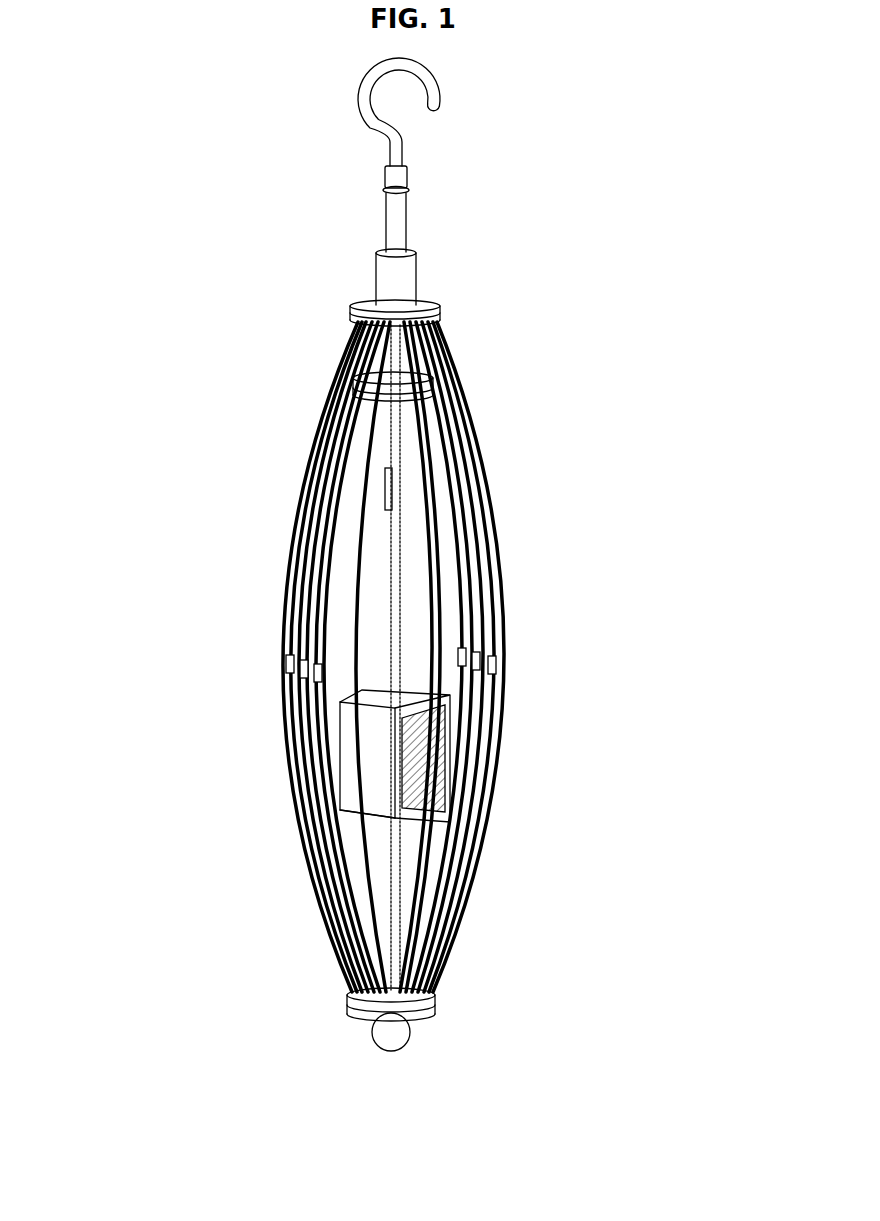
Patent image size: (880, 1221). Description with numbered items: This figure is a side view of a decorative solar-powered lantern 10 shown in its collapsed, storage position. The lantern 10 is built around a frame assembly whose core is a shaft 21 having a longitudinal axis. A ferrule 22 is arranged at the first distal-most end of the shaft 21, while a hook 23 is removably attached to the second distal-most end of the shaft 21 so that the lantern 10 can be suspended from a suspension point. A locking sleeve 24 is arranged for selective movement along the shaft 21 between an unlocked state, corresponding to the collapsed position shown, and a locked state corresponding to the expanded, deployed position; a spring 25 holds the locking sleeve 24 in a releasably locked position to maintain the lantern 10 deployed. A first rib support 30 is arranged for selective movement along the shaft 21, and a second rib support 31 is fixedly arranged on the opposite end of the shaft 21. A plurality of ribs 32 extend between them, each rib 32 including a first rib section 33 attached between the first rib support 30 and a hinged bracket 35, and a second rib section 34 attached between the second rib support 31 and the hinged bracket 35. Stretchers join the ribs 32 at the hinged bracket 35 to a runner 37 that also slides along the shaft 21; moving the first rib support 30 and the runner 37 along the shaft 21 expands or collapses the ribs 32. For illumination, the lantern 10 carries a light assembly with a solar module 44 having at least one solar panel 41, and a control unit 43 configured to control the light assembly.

The solar-powered lantern 10 is at (112, 120).
The shaft 21 is at (400, 180).
The ferrule 22 is at (395, 1032).
The hook 23 is at (432, 97).
The locking sleeve 24 is at (400, 280).
The spring 25 is at (388, 505).
The first rib support 30 is at (365, 318).
The second rib support 31 is at (425, 1005).
The ribs 32 is at (470, 447).
The first rib section 33 is at (297, 536).
The second rib section 34 is at (322, 818).
The hinged bracket 35 is at (290, 664).
The runner 37 is at (370, 382).
The solar panel 41 is at (395, 734).
The control unit 43 is at (345, 745).
The solar module 44 is at (400, 820).